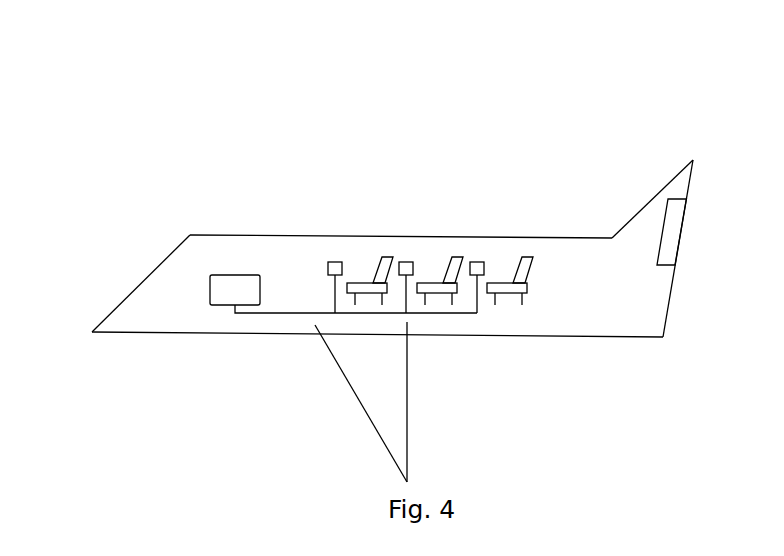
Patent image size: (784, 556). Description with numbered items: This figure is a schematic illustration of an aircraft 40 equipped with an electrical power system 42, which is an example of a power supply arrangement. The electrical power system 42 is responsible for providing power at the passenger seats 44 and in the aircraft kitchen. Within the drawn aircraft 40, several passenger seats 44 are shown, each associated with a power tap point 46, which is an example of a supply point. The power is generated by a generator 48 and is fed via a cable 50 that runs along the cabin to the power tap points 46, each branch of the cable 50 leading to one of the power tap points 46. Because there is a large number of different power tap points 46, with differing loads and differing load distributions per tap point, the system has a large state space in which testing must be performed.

The aircraft 40 is at (120, 158).
The electrical power system 42 is at (270, 238).
The passenger seat 44 is at (391, 233).
The power tap point 46 is at (430, 70).
The generator 48 is at (190, 293).
The cable 50 is at (277, 335).